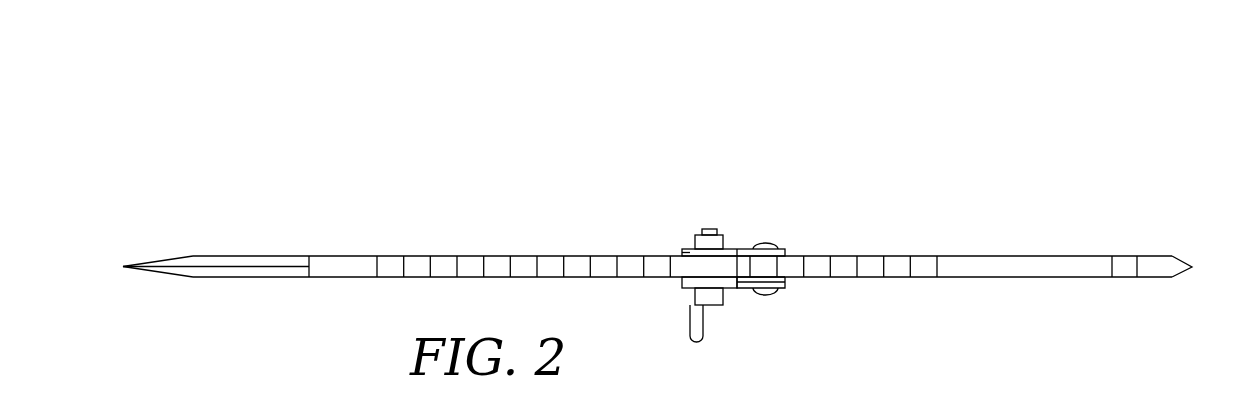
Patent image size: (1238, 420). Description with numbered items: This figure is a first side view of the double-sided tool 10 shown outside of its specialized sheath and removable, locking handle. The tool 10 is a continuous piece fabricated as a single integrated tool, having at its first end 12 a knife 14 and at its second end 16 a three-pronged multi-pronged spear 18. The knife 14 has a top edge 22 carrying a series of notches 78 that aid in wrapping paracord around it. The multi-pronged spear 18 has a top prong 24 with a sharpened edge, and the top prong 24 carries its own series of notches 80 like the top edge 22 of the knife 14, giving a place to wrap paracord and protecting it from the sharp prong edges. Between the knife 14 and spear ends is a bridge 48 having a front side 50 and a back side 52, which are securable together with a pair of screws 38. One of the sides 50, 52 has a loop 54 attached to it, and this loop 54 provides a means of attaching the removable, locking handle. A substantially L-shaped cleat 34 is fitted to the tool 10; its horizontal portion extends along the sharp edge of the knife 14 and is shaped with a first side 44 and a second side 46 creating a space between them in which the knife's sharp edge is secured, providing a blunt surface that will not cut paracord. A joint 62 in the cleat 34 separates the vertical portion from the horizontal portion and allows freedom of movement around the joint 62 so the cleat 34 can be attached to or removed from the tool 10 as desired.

The double-sided tool 10 is at (258, 207).
The first end 12 is at (127, 255).
The knife 14 is at (345, 270).
The second end 16 is at (1185, 253).
The multi-pronged spear 18 is at (1157, 268).
The top edge 22 is at (207, 272).
The top prong 24 is at (1007, 268).
The cleat 34 is at (790, 249).
The screws 38 is at (710, 229).
The first side 44 is at (747, 250).
The second side 46 is at (745, 290).
The bridge 48 is at (730, 249).
The front side 50 is at (685, 249).
The back side 52 is at (680, 285).
The loop 54 is at (700, 330).
The joint 62 is at (788, 292).
The notches 78 is at (447, 263).
The notches 80 is at (923, 265).